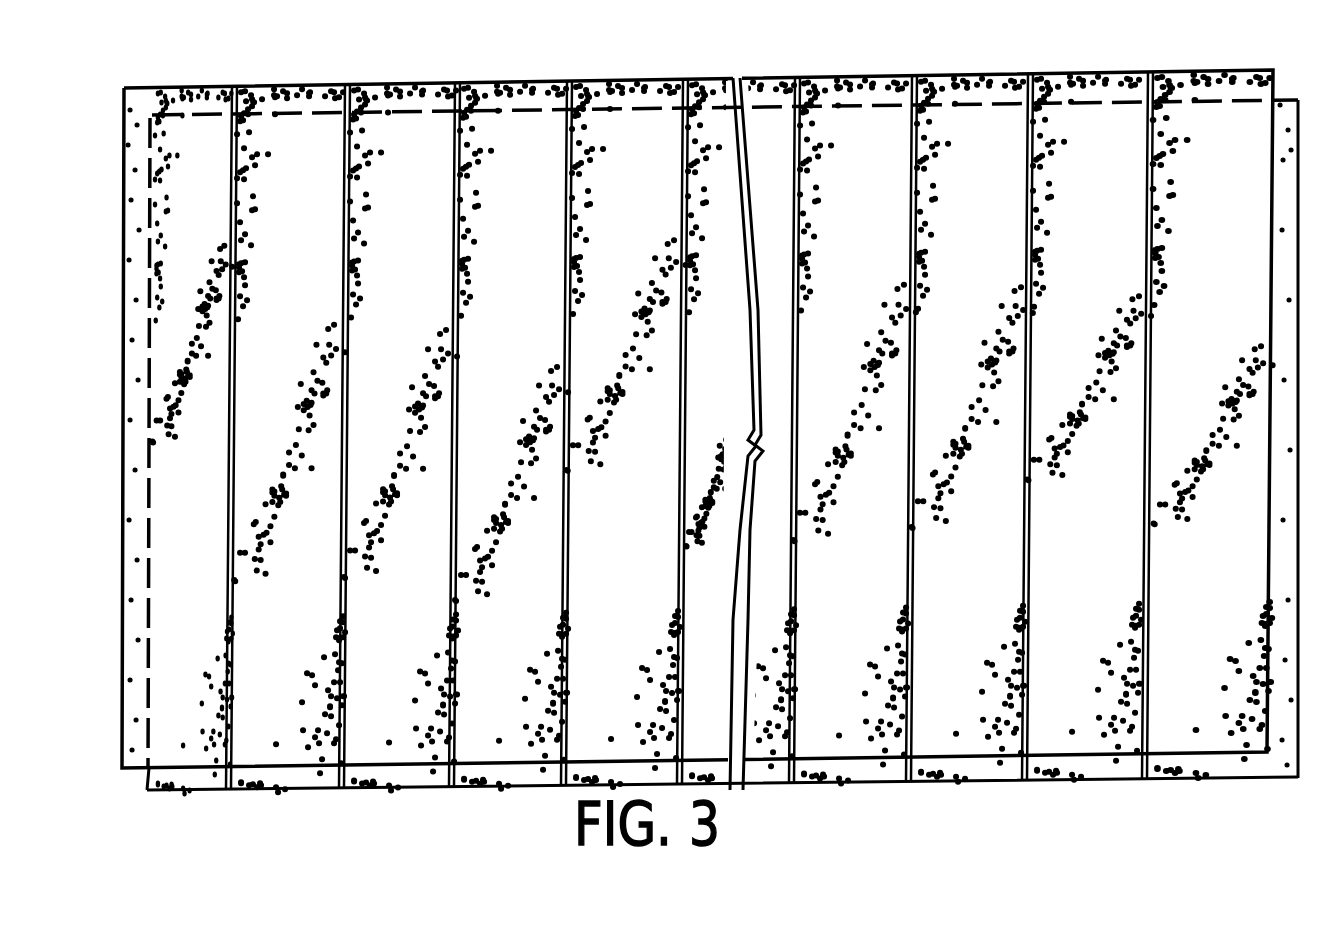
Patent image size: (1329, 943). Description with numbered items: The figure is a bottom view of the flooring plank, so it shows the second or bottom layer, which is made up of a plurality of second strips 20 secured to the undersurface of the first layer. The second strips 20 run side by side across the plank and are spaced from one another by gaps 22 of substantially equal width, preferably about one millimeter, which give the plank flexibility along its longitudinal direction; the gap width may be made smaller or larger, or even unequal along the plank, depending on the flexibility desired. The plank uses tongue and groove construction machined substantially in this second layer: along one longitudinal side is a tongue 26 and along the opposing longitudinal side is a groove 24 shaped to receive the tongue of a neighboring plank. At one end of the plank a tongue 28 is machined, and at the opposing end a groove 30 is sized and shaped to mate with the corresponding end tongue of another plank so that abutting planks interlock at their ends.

The second strips 20 is at (520, 165).
The gaps 22 is at (458, 95).
The groove 24 is at (268, 104).
The tongue 26 is at (1082, 767).
The tongue 28 is at (1299, 163).
The groove 30 is at (122, 148).